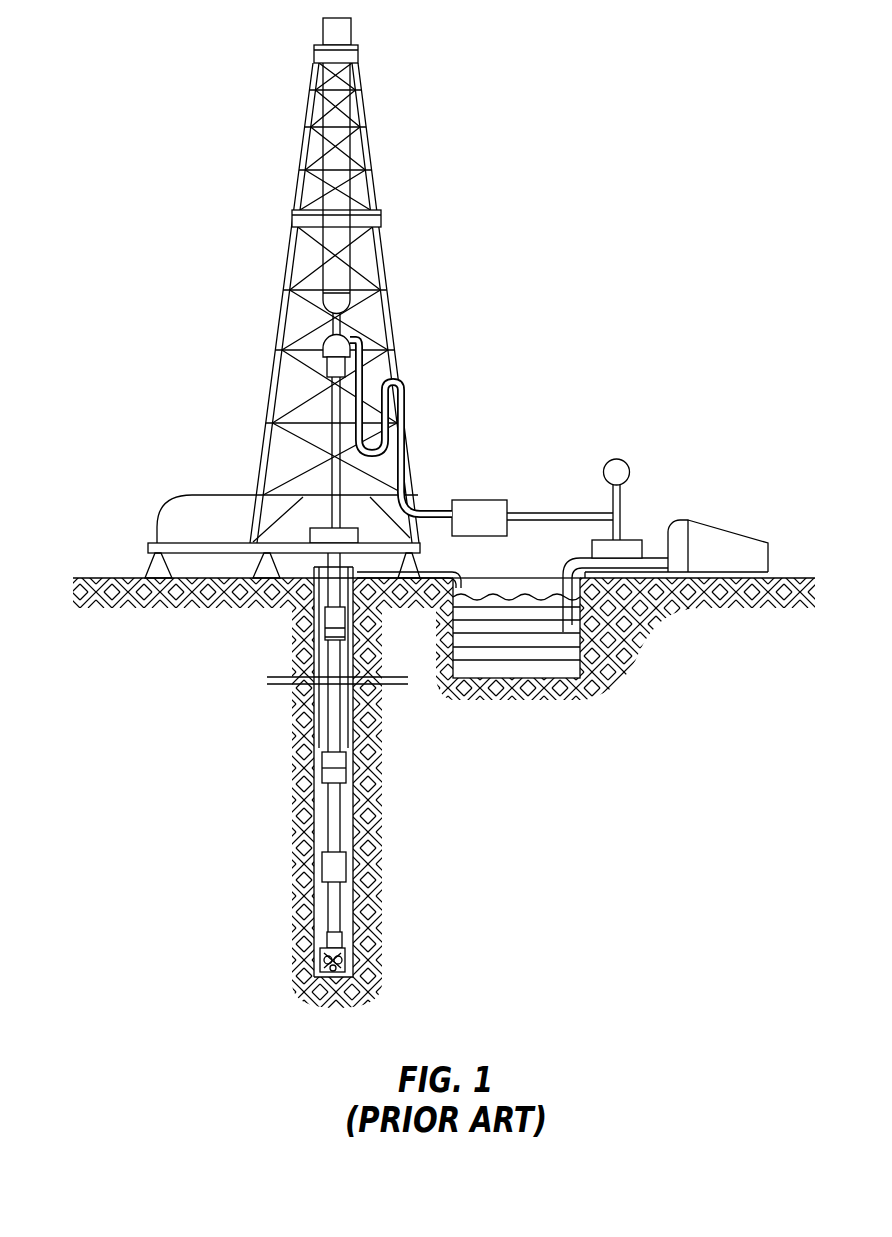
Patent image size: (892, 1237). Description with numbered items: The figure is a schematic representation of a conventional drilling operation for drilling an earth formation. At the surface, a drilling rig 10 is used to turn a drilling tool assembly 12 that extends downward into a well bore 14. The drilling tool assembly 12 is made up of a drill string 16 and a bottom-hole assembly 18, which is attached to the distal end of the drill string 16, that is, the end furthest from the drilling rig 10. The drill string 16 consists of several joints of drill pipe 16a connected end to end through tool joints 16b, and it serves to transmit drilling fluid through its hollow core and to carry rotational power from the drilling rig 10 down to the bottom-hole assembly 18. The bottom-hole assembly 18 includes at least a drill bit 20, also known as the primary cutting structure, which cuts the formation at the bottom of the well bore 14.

The drilling rig 10 is at (437, 51).
The drilling tool assembly 12 is at (358, 737).
The well bore 14 is at (353, 845).
The drill string 16 is at (336, 742).
The drill pipe 16a is at (340, 818).
The tool joints 16b is at (338, 773).
The bottom-hole assembly 18 is at (327, 930).
The drill bit 20 is at (340, 960).